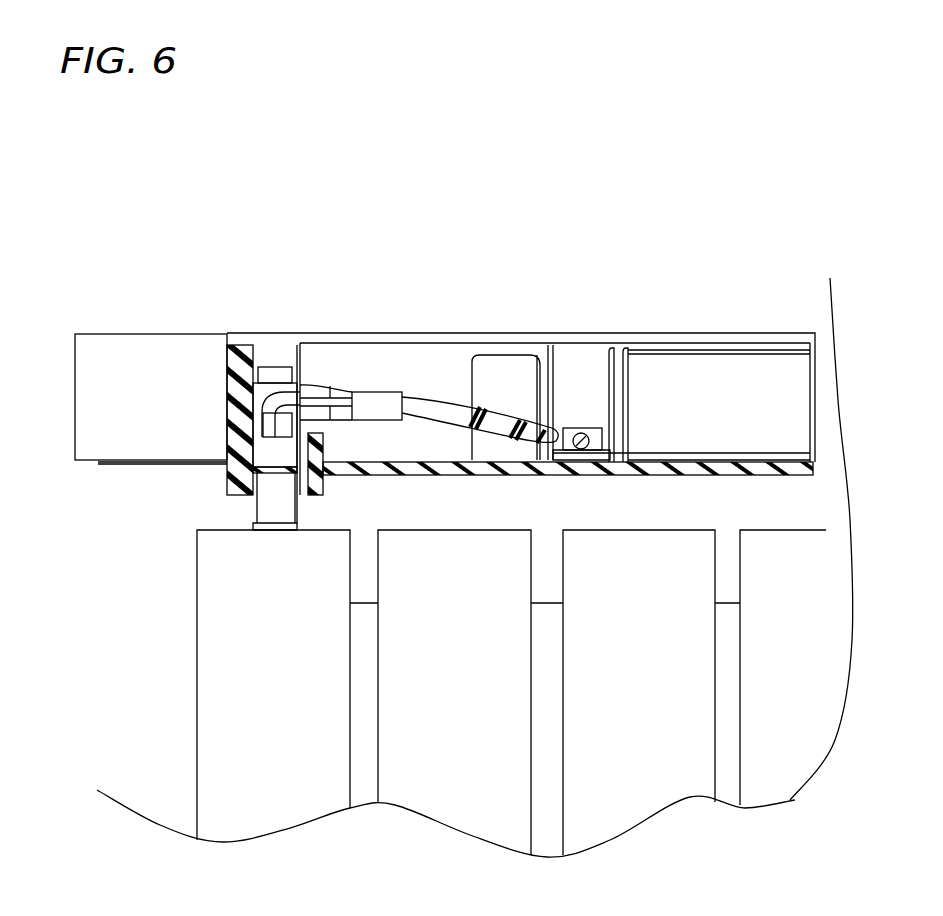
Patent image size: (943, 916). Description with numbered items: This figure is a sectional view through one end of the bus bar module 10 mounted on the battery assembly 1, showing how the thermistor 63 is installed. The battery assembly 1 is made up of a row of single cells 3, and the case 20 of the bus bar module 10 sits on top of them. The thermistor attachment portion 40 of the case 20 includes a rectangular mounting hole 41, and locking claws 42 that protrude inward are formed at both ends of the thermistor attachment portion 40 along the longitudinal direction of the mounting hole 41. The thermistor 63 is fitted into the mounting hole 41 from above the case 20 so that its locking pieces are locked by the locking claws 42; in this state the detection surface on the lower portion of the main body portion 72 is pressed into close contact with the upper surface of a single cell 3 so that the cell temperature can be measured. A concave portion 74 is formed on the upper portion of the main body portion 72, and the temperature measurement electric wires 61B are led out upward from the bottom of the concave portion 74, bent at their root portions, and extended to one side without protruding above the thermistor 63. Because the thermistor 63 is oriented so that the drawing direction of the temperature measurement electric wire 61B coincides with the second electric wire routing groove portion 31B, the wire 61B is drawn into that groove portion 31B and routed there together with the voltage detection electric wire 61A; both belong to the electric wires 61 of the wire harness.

The battery assembly 1 is at (184, 710).
The single cell 3 is at (792, 787).
The bus bar module 10 is at (235, 288).
The case 20 is at (777, 328).
The second electric wire routing groove portion 31B is at (690, 385).
The thermistor attachment portion 40 is at (231, 378).
The mounting hole 41 is at (257, 390).
The locking claw 42 is at (280, 365).
The electric wire 61 is at (455, 206).
The voltage detection electric wire 61A is at (580, 432).
The temperature measurement electric wire 61B is at (432, 397).
The thermistor 63 is at (256, 514).
The main body portion 72 is at (262, 450).
The concave portion 74 is at (262, 430).